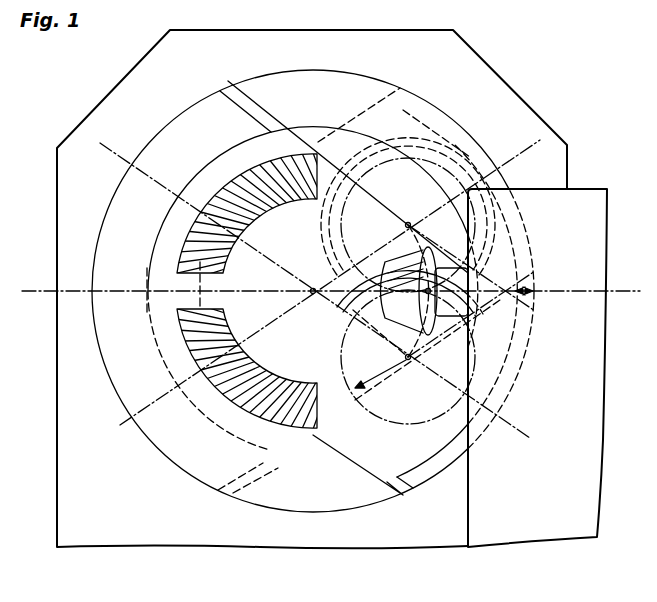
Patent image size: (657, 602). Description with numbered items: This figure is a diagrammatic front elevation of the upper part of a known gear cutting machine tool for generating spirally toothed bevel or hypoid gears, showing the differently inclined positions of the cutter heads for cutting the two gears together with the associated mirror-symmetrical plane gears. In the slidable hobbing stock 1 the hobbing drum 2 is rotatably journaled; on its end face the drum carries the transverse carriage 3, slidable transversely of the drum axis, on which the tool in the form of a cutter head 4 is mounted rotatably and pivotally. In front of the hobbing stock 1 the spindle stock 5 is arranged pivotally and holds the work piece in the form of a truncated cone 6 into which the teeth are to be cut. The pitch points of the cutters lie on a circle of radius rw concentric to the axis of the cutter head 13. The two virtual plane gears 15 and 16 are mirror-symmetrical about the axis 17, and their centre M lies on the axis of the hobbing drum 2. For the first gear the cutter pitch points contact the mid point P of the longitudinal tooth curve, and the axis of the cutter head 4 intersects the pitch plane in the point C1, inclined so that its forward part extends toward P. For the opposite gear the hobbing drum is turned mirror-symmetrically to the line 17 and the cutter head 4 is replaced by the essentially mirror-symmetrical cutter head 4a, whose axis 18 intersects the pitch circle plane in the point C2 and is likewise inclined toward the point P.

The hobbing stock 1 is at (497, 92).
The hobbing drum 2 is at (201, 115).
The transverse carriage 3 is at (362, 460).
The cutter head 4 is at (470, 443).
The cutter head 4a is at (447, 178).
The spindle stock 5 is at (583, 200).
The truncated cone 6 is at (383, 315).
The axis of the cutter head 13 is at (400, 332).
The virtual plane gear 15 is at (220, 386).
The virtual plane gear 16 is at (225, 198).
The axis 17 is at (47, 293).
The axis of the cutter head 4a 18 is at (410, 241).
The centre of the plane wheels M is at (313, 289).
The mid point of the longitudinal tooth curve P is at (463, 313).
The intersection point of the cutter head axis C1 is at (409, 360).
The intersection point of the cutter head axis C2 is at (408, 223).
The radius of the pitch point circle rw is at (373, 382).